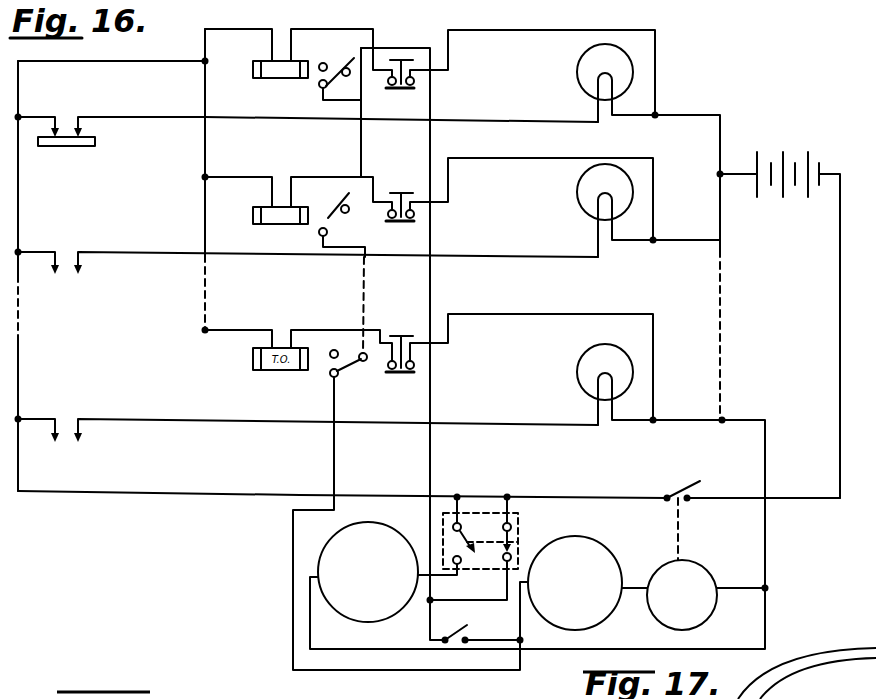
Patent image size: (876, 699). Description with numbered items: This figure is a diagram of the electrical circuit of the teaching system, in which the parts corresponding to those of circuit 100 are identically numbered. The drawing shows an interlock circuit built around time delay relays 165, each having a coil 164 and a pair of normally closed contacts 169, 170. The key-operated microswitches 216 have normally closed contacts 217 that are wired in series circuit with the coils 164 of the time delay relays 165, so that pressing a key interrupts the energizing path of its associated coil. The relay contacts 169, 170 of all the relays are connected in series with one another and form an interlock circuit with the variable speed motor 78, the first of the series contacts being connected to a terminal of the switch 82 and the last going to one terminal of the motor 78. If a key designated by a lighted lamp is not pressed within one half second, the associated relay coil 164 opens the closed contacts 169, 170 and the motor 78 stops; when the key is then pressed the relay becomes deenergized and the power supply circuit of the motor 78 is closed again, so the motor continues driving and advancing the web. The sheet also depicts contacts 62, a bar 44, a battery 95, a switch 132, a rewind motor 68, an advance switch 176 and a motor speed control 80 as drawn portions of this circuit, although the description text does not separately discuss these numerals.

The contact prongs 62 is at (78, 122).
The contact bar 44 is at (58, 148).
The time delay relay 165 is at (280, 86).
The coil 164 is at (278, 206).
The normally closed contact 170 is at (338, 206).
The microswitch 216 is at (413, 167).
The normally closed contact 169 is at (342, 226).
The normally closed contacts 217 is at (384, 214).
The battery 95 is at (788, 198).
The switch 132 is at (677, 494).
The circuit 100 is at (260, 562).
The rewind motor 68 is at (368, 623).
The switch 82 is at (443, 516).
The advance switch 176 is at (452, 644).
The variable speed motor 78 is at (627, 525).
The motor speed control 80 is at (697, 570).